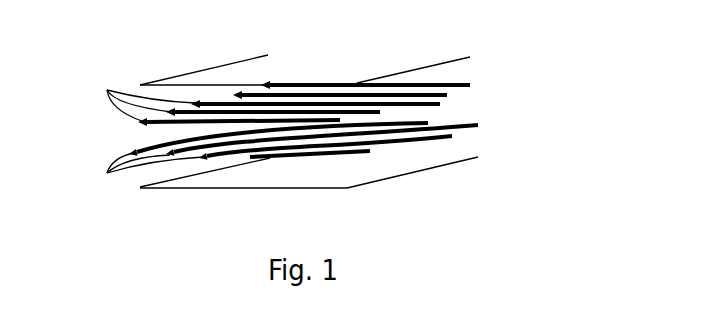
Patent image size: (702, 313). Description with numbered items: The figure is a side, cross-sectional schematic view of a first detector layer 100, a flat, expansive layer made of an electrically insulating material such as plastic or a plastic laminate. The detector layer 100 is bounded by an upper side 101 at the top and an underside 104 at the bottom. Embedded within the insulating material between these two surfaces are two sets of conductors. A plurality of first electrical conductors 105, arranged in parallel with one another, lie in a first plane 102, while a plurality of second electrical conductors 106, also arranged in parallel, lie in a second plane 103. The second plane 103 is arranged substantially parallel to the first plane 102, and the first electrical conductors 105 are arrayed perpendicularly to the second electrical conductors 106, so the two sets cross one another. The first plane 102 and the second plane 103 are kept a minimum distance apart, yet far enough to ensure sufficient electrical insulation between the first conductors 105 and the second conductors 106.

The first detector layer 100 is at (320, 108).
The upper side 101 is at (470, 63).
The first plane 102 is at (470, 97).
The second plane 103 is at (470, 138).
The underside 104 is at (470, 167).
The first electrical conductors 105 is at (136, 90).
The second electrical conductors 106 is at (140, 181).